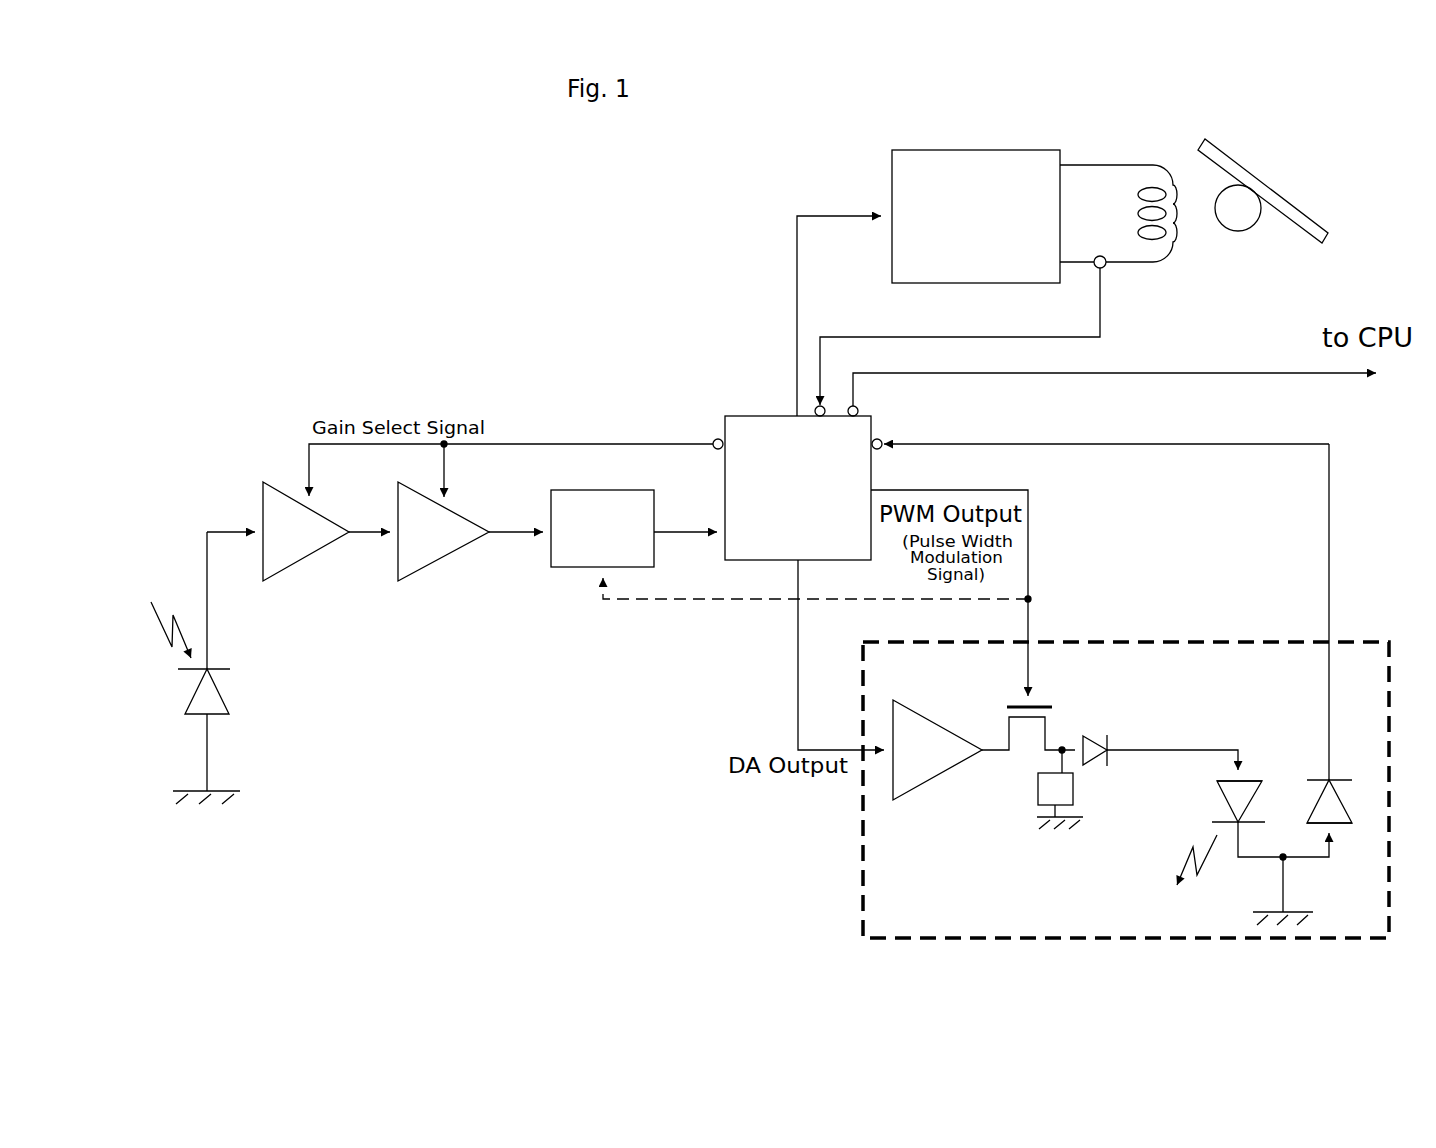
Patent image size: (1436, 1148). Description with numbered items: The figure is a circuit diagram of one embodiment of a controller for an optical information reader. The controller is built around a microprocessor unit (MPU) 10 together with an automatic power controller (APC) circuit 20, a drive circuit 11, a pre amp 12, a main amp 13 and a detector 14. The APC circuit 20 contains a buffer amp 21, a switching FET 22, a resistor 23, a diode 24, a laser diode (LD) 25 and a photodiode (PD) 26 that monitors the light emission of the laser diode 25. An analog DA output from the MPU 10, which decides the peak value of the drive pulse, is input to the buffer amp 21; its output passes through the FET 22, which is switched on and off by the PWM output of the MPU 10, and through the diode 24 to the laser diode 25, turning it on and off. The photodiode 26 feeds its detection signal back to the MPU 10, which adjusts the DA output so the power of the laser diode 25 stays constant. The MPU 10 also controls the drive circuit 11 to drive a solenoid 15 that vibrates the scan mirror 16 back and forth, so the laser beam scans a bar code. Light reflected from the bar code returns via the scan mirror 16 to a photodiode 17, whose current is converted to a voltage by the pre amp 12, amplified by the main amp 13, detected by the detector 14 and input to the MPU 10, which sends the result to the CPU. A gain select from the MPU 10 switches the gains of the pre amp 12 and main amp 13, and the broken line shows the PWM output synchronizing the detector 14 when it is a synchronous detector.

The microprocessor unit (MPU) 10 is at (752, 416).
The drive circuit 11 is at (975, 147).
The pre amp 12 is at (303, 563).
The main amp 13 is at (442, 563).
The detector 14 is at (569, 570).
The solenoid 15 is at (1163, 145).
The scan mirror 16 is at (1290, 208).
The photodiode 17 is at (223, 690).
The automatic power controller (APC) circuit 20 is at (1126, 691).
The buffer amp 21 is at (930, 780).
The FET 22 is at (1040, 705).
The resistor 23 is at (1073, 790).
The diode 24 is at (1095, 737).
The laser diode (LD) 25 is at (1252, 778).
The photodiode (PD) 26 is at (1343, 778).